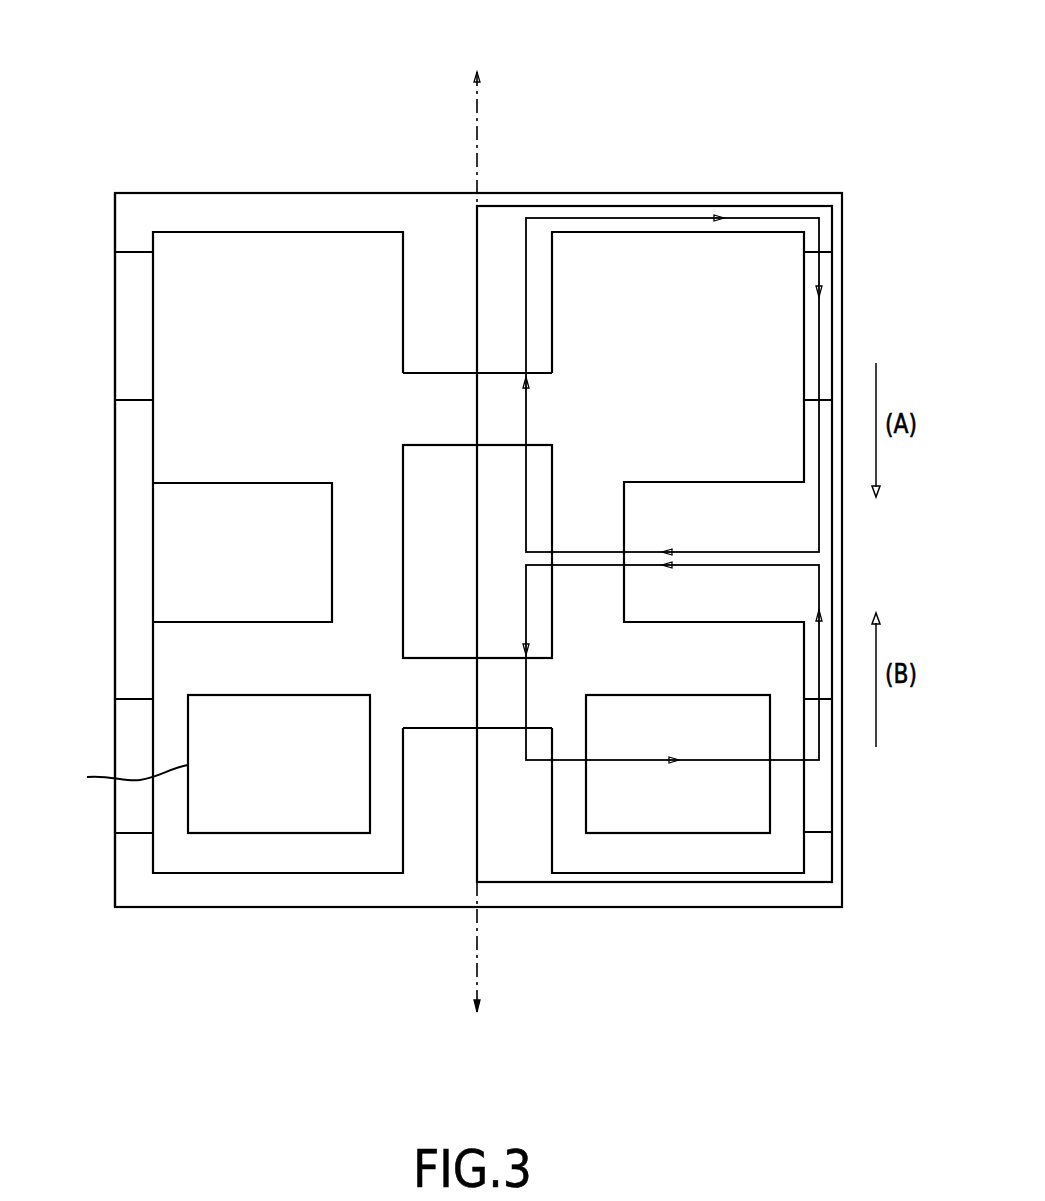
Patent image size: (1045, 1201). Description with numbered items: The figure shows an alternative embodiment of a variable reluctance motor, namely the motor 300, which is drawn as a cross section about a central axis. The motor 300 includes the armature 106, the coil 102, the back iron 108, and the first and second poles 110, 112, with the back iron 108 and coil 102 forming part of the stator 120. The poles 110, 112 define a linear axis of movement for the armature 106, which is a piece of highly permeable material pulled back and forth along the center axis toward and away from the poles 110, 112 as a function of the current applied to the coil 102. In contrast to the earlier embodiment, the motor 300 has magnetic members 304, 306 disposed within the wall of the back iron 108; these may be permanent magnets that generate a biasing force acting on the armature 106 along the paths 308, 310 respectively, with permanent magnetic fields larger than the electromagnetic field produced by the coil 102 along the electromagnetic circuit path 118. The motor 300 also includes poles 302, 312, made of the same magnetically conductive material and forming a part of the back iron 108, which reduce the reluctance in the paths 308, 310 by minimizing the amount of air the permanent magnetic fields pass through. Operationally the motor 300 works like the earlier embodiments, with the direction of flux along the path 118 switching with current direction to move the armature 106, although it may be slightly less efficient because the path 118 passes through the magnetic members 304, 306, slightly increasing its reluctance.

The motor 300 is at (327, 117).
The pole 302 is at (277, 610).
The pole 312 is at (720, 610).
The drive coil 102 is at (300, 825).
The armature 106 is at (420, 443).
The back iron 108 is at (115, 432).
The first pole 110 is at (446, 728).
The second pole 112 is at (403, 335).
The electromagnetic circuit path 118 is at (837, 533).
The stator 120 is at (115, 845).
The magnetic member 304 is at (125, 325).
The magnetic member 306 is at (115, 765).
The path 308 is at (526, 397).
The path 310 is at (526, 673).